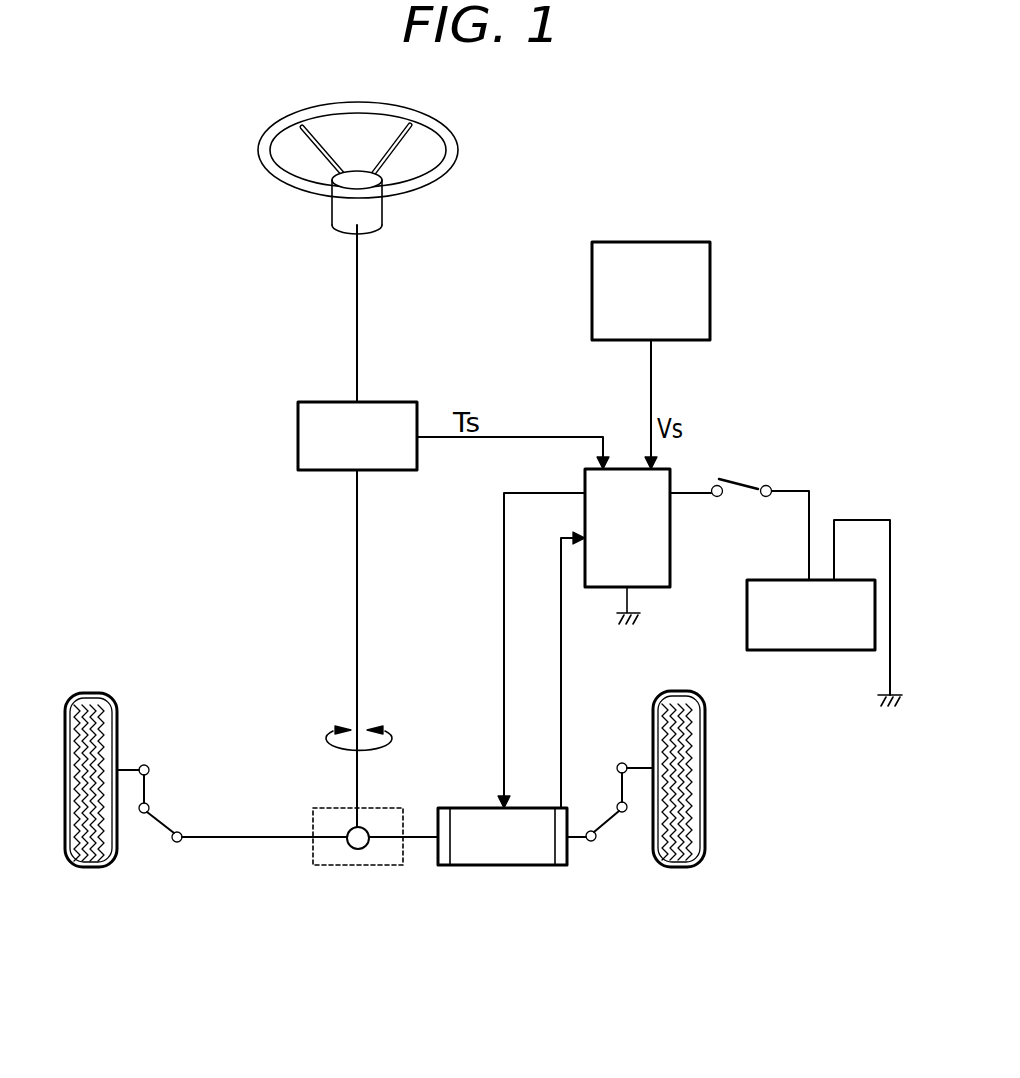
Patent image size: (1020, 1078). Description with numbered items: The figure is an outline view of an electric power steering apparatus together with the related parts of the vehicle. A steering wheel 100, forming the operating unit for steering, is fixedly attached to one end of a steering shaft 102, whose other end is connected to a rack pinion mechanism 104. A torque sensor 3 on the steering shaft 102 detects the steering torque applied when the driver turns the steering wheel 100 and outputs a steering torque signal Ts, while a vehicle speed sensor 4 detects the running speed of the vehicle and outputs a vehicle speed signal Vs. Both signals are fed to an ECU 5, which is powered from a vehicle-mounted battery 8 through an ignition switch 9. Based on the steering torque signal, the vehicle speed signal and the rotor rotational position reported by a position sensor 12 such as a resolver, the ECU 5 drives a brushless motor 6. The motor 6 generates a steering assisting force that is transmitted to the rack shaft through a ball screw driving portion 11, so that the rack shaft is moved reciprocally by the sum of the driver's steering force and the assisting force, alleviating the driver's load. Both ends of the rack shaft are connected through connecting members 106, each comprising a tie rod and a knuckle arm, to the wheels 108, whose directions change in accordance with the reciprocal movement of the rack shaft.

The steering wheel 100 is at (450, 153).
The steering shaft 102 is at (357, 282).
The torque sensor 3 is at (297, 422).
The vehicle speed sensor 4 is at (681, 242).
The ECU 5 is at (670, 548).
The ignition switch 9 is at (743, 484).
The battery 8 is at (785, 651).
The brushless motor 6 is at (508, 865).
The ball screw driving portion 11 is at (445, 865).
The position sensor 12 is at (560, 865).
The rack pinion mechanism 104 is at (327, 865).
The connecting members 106 is at (174, 812).
The wheels 108 is at (88, 867).